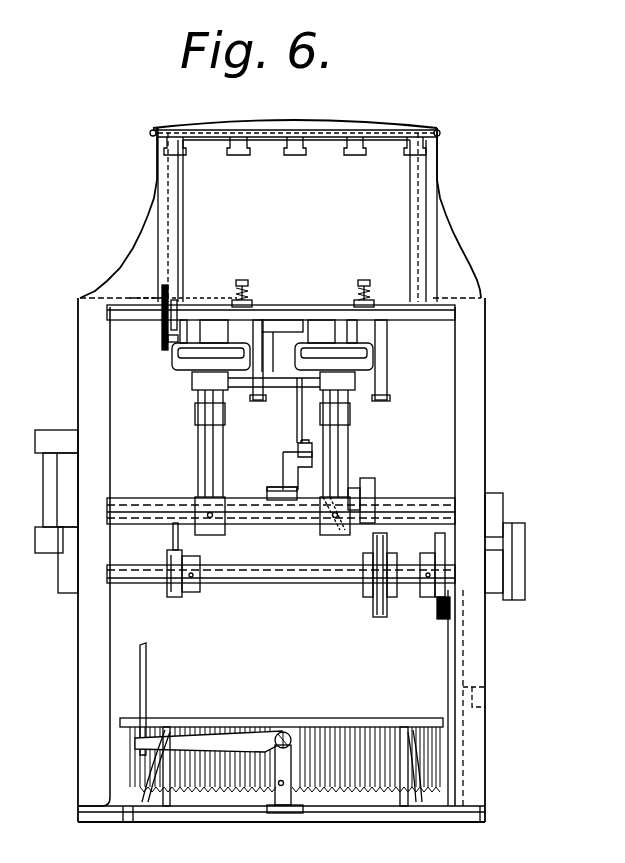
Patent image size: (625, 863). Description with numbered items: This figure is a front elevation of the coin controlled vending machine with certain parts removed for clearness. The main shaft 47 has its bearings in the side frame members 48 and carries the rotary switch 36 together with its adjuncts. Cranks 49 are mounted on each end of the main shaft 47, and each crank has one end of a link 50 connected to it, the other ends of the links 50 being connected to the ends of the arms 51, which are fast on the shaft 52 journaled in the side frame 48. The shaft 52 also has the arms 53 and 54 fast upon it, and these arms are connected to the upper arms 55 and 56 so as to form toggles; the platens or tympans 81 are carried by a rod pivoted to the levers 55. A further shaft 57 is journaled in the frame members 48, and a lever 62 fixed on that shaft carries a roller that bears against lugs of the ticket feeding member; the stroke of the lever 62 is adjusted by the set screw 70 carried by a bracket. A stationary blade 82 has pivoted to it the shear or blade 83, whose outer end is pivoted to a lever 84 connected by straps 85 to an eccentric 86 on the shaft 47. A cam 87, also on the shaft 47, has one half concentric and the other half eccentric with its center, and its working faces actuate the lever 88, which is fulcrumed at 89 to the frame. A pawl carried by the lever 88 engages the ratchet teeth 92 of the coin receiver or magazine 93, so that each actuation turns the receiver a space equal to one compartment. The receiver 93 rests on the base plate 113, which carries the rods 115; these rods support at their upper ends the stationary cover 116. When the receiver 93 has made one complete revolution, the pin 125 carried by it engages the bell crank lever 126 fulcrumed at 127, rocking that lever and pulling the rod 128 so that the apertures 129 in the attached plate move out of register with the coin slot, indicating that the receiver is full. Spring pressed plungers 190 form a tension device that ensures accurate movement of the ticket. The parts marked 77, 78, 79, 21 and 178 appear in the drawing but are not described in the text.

The apertures 129 is at (313, 124).
The hanger brackets 178 is at (290, 158).
The stationary blade 82 is at (185, 318).
The shear or blade 83 is at (167, 339).
The spring pressed plungers 190 is at (236, 296).
The bracket 77 is at (280, 322).
The platens or tympans 81 is at (190, 356).
The hanger bars 78 is at (265, 375).
The feet of hanger bars 79 is at (390, 410).
The upper arm 55 is at (198, 395).
The upper arm 56 is at (347, 392).
The lever 62 is at (303, 419).
The lever 84 is at (172, 434).
The arm 53 is at (220, 458).
The arm 54 is at (345, 456).
The set screw 70 is at (279, 455).
The bracket 21 is at (284, 478).
The shaft 52 is at (410, 514).
The shaft 57 is at (386, 498).
The main shaft 47 is at (300, 586).
The straps 85 is at (170, 556).
The eccentric 86 is at (186, 595).
The rotary switch 36 is at (370, 598).
The cam 87 is at (440, 585).
The lever 88 is at (460, 652).
The fulcrum 89 is at (462, 692).
The side frame members 48 is at (472, 440).
The arms 51 is at (70, 465).
The link 50 is at (48, 491).
The cranks 49 is at (62, 582).
The rod 128 is at (147, 668).
The stationary cover 116 is at (312, 724).
The coin receiver or magazine 93 is at (285, 757).
The ratchet teeth 92 is at (336, 792).
The bell crank lever 126 is at (214, 742).
The fulcrum 127 is at (283, 732).
The pin 125 is at (280, 788).
The rods 115 is at (167, 806).
The base plate 113 is at (115, 814).